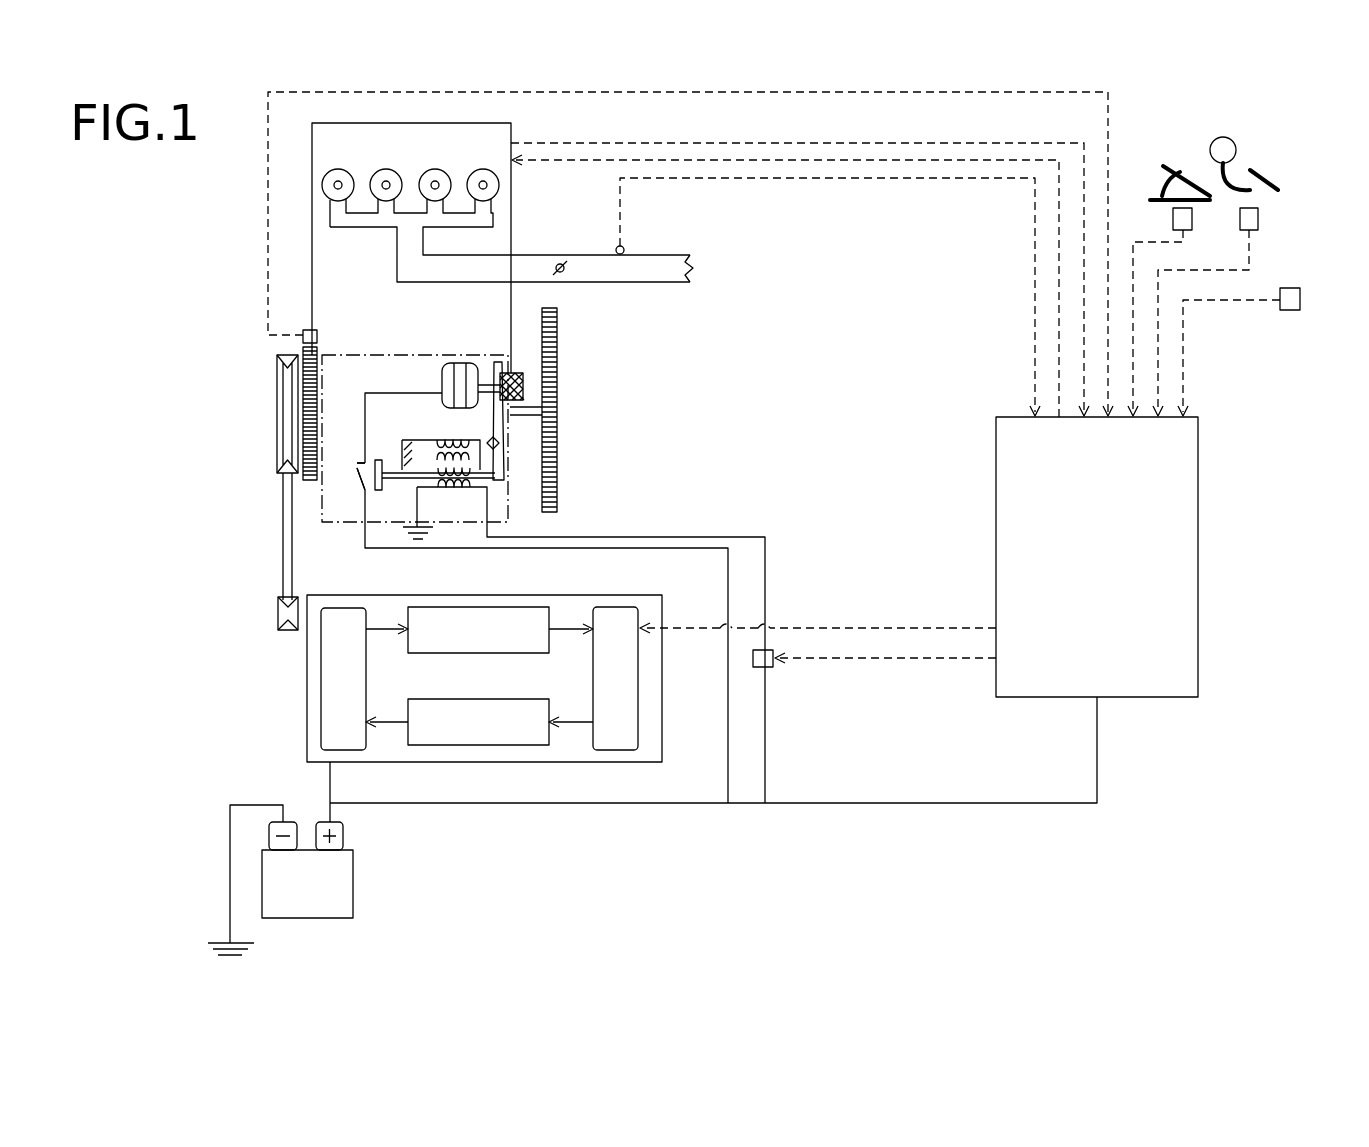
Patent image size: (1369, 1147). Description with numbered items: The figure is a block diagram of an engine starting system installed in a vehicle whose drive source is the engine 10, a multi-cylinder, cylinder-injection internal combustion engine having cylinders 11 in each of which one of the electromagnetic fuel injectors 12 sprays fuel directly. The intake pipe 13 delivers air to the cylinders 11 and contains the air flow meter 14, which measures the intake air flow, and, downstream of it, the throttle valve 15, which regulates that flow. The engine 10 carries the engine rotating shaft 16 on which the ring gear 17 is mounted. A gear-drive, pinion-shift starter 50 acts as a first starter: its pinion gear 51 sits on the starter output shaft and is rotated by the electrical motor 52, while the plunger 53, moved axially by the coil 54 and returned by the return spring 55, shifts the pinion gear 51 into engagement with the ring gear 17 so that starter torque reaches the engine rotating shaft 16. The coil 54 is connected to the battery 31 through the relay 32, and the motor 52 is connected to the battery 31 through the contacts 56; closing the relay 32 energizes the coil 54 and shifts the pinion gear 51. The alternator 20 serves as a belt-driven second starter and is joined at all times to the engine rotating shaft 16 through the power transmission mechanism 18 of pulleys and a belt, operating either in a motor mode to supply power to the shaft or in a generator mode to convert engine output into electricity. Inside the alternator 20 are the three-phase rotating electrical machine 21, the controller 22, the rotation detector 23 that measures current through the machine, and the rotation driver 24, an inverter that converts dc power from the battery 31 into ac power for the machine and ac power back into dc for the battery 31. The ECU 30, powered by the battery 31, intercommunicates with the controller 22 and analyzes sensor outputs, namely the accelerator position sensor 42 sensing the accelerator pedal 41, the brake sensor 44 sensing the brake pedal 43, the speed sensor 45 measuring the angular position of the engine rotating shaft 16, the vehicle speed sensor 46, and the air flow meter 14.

The engine 10 is at (512, 123).
The cylinders 11 is at (352, 174).
The electromagnetic fuel injectors 12 is at (338, 181).
The intake pipe 13 is at (353, 229).
The air flow meter 14 is at (626, 255).
The throttle valve 15 is at (559, 263).
The engine rotating shaft 16 is at (524, 418).
The ring gear 17 is at (549, 310).
The power transmission mechanism 18 is at (257, 407).
The alternator 20 is at (510, 691).
The rotating electrical machine 21 is at (348, 608).
The controller 22 is at (614, 607).
The rotation detector 23 is at (513, 607).
The rotation driver 24 is at (512, 745).
The ECU 30 is at (1199, 452).
The battery 31 is at (353, 885).
The relay 32 is at (775, 670).
The accelerator pedal 41 is at (1176, 172).
The accelerator position sensor 42 is at (1193, 222).
The brake pedal 43 is at (1262, 170).
The brake sensor 44 is at (1259, 224).
The speed sensor 45 is at (308, 330).
The vehicle speed sensor 46 is at (1301, 305).
The starter 50 is at (378, 355).
The pinion gear 51 is at (505, 372).
The electrical motor 52 is at (442, 381).
The plunger 53 is at (400, 480).
The coil 54 is at (455, 488).
The return spring 55 is at (440, 446).
The contacts 56 is at (362, 482).